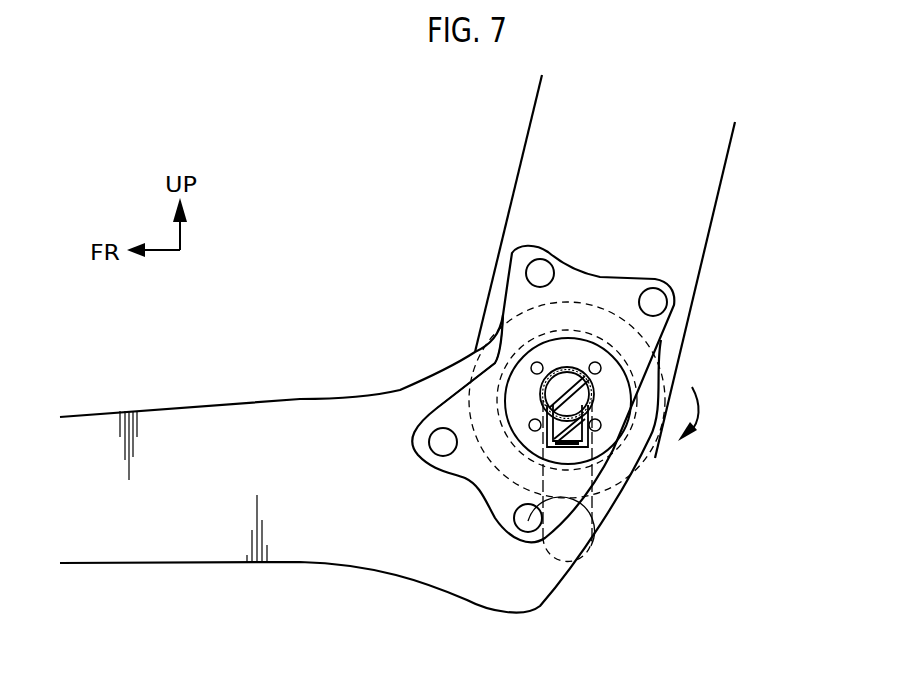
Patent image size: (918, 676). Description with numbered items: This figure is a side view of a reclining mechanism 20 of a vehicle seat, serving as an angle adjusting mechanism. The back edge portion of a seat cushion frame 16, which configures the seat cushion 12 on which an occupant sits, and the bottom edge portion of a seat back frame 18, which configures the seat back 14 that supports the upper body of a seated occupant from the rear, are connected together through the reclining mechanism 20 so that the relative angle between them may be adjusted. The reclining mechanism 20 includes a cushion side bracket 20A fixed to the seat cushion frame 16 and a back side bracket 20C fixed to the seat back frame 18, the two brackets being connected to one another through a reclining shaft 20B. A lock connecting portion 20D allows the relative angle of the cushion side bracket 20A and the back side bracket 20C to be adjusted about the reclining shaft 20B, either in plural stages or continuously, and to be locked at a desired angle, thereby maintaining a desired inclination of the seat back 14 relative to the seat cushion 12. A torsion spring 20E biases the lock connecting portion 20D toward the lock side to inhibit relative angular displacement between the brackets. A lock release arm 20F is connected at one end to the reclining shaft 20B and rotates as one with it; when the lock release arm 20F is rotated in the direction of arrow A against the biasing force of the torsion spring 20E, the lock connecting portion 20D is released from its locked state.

The seat cushion 12 is at (281, 439).
The seat back 14 is at (397, 344).
The seat cushion frame 16 is at (205, 423).
The seat back frame 18 is at (540, 155).
The reclining mechanism 20 is at (684, 283).
The cushion side bracket 20A is at (591, 546).
The reclining shaft 20B is at (563, 370).
The back side bracket 20C is at (657, 330).
The lock connecting portion 20D is at (593, 333).
The torsion spring 20E is at (543, 403).
The lock release arm 20F is at (593, 507).
The arrow A is at (700, 424).